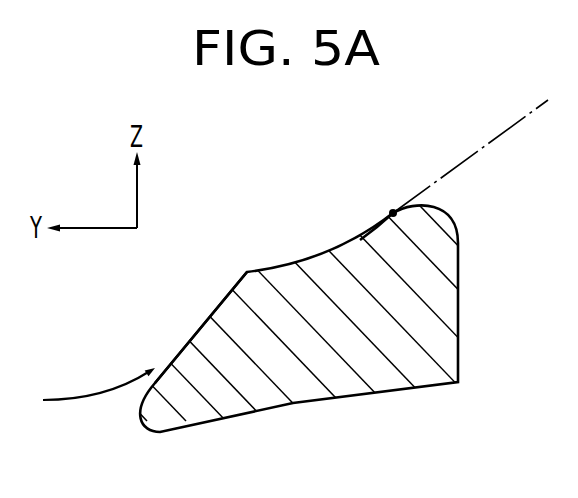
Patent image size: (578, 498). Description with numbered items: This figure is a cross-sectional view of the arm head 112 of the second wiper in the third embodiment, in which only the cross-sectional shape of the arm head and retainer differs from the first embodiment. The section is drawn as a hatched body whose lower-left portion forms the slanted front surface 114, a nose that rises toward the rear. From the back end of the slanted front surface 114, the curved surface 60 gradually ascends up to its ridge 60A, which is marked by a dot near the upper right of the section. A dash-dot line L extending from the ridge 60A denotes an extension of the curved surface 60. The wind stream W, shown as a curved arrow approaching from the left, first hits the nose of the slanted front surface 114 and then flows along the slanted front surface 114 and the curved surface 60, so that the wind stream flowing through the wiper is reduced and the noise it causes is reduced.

The curved surface 60 is at (315, 255).
The ridge 60A is at (393, 213).
The arm head 112 is at (385, 192).
The slanted front surface 114 is at (203, 325).
The line L is at (485, 150).
The wind stream W is at (83, 396).